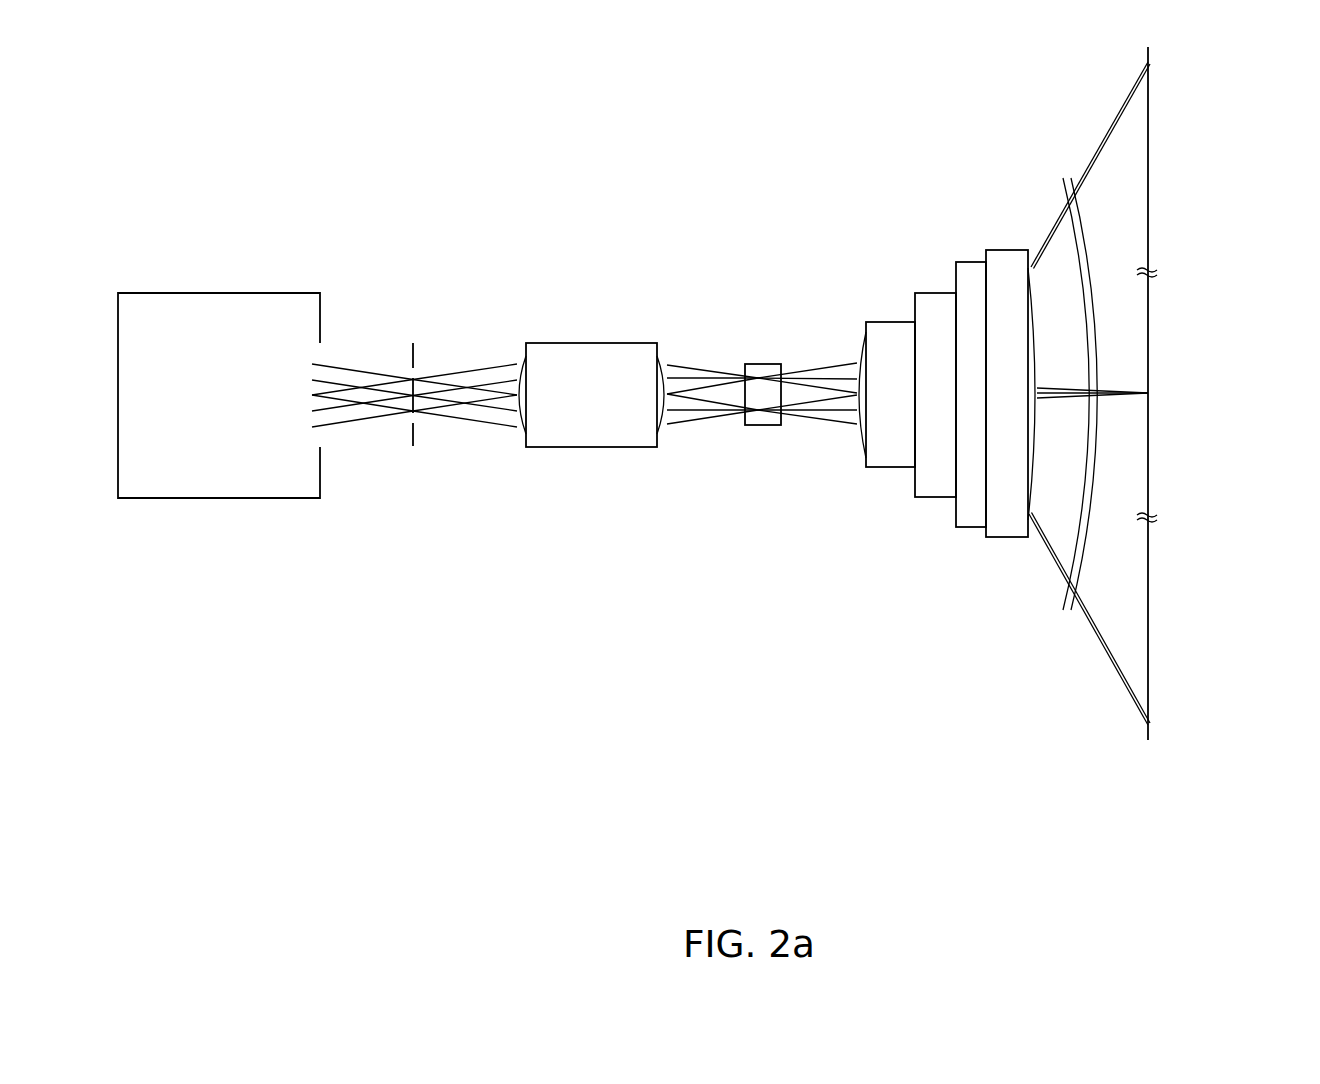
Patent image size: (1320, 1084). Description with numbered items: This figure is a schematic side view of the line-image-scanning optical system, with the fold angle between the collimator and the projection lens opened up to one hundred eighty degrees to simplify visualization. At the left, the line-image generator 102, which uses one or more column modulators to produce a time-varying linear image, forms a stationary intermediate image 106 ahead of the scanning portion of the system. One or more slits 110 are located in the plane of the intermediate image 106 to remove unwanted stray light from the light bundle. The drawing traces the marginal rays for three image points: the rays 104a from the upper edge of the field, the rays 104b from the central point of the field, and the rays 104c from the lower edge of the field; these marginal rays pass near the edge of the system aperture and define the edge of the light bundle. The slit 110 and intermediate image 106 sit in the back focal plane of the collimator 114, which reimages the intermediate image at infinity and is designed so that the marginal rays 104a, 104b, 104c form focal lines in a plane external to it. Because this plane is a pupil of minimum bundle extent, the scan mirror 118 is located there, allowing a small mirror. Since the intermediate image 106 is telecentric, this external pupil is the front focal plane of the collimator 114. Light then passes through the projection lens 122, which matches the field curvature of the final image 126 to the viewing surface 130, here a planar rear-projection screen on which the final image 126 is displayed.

The line-image generator 102 is at (200, 293).
The marginal rays for upper edge image point 104a is at (343, 358).
The marginal rays for central image point 104b is at (353, 376).
The marginal rays for lower edge image point 104c is at (362, 393).
The intermediate image 106 is at (443, 355).
The slit 110 is at (413, 438).
The collimator 114 is at (568, 343).
The scan mirror 118 is at (758, 364).
The projection lens 122 is at (913, 248).
The final image 126 is at (1197, 320).
The viewing surface 130 is at (1148, 505).